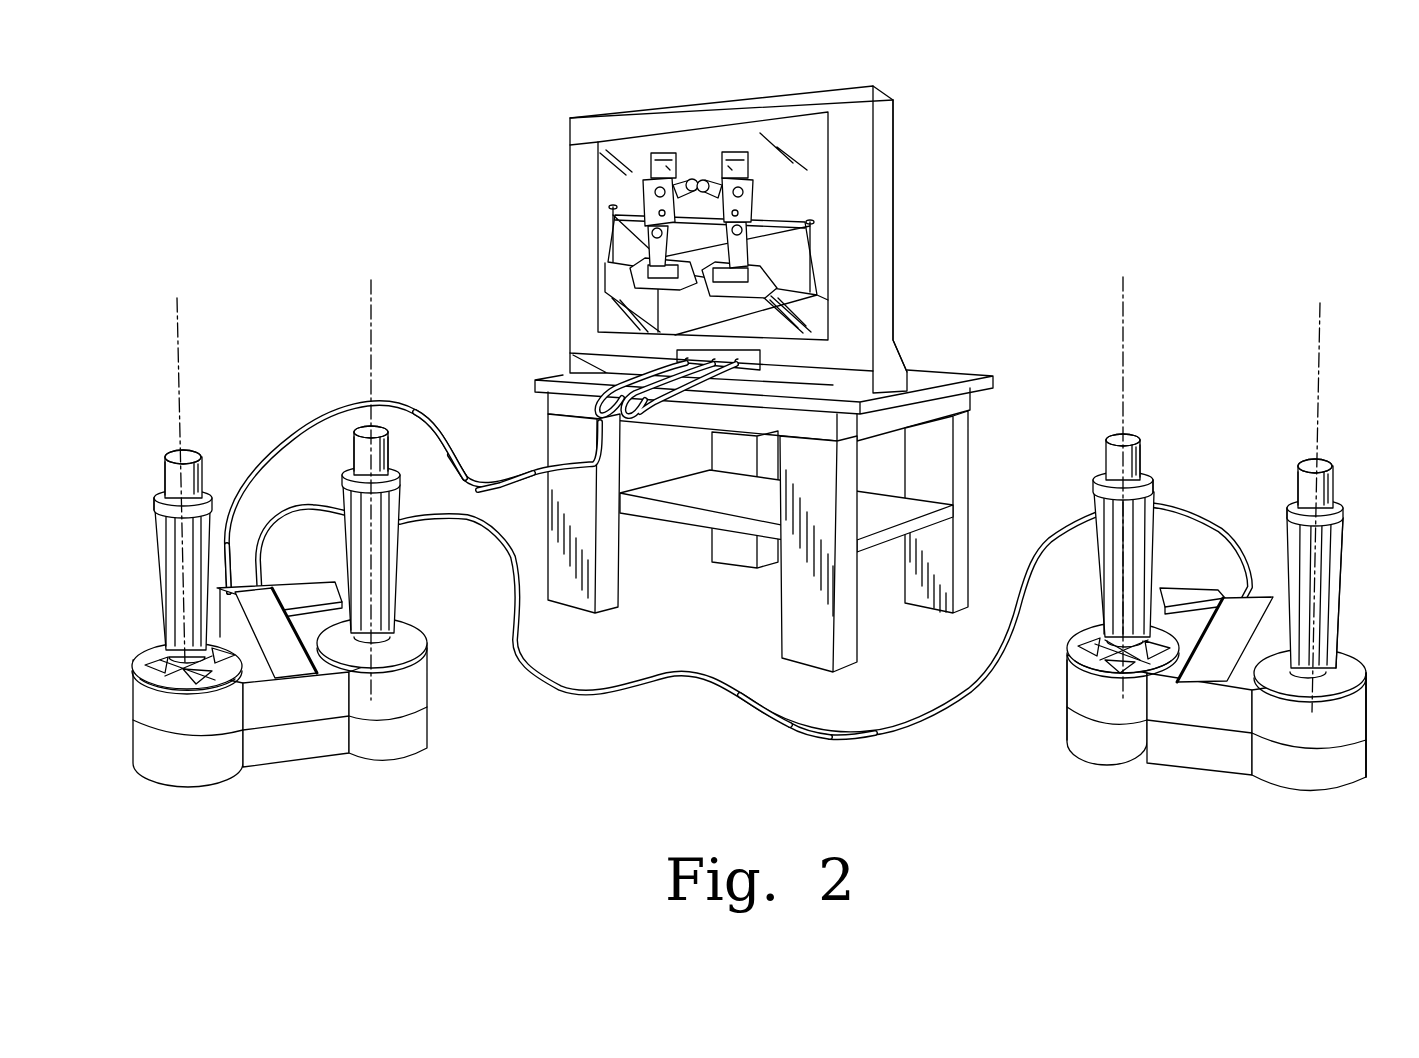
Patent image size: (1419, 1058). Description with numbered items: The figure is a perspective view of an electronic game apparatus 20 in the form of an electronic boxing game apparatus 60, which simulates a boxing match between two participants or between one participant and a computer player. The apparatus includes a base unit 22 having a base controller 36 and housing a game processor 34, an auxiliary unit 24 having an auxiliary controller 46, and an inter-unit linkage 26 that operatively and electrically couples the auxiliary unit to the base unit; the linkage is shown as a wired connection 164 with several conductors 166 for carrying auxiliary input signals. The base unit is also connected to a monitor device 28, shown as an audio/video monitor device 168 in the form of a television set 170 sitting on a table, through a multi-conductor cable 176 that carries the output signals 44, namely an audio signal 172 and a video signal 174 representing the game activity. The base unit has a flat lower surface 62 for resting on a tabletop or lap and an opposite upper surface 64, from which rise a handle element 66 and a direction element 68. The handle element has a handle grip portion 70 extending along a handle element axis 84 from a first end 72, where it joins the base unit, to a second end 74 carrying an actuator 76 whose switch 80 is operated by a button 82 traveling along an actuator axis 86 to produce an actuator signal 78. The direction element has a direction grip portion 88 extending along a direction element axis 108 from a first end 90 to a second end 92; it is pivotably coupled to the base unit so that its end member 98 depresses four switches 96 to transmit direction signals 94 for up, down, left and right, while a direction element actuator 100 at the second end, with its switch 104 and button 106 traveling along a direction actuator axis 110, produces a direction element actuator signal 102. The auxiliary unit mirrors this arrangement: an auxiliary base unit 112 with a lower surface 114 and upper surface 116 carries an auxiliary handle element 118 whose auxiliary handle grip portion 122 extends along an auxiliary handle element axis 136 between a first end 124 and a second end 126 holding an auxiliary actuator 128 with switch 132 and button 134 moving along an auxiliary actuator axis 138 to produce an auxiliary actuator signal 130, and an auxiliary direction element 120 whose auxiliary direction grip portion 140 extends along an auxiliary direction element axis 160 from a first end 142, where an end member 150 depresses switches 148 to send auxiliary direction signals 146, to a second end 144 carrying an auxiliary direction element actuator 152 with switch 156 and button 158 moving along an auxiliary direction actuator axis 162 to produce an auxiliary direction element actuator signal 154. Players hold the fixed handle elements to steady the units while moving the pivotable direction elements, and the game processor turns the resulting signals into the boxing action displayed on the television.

The electronic game apparatus 20 is at (1042, 201).
The base unit 22 is at (312, 681).
The auxiliary unit 24 is at (1303, 785).
The inter-unit linkage 26 is at (887, 737).
The monitor device 28 is at (885, 123).
The game processor 34 is at (393, 676).
The base controller 36 is at (300, 760).
The output signals 44 is at (445, 440).
The auxiliary controller 46 is at (1207, 717).
The electronic boxing game apparatus 60 is at (992, 328).
The lower surface 62 is at (258, 767).
The upper surface 64 is at (267, 597).
The handle element 66 is at (443, 511).
The direction element 68 is at (180, 524).
The handle grip portion 70 is at (378, 589).
The first end 72 is at (408, 636).
The second end 74 is at (408, 458).
The actuator 76 is at (351, 438).
The actuator signal 78 is at (392, 444).
The switch 80 is at (337, 497).
The button 82 is at (375, 426).
The handle element axis 84 is at (378, 548).
The actuator axis 86 is at (377, 298).
The direction grip portion 88 is at (192, 564).
The first end 90 is at (148, 649).
The second end 92 is at (148, 506).
The direction signals 94 is at (177, 690).
The switches 96 is at (235, 693).
The end member 98 is at (276, 633).
The direction element actuator 100 is at (192, 452).
The direction element actuator signal 102 is at (170, 480).
The switch 104 is at (168, 495).
The button 106 is at (175, 453).
The direction element axis 108 is at (221, 543).
The direction actuator axis 110 is at (180, 320).
The auxiliary base unit 112 is at (1067, 731).
The lower surface 114 is at (1235, 757).
The upper surface 116 is at (1230, 677).
The auxiliary handle element 118 is at (1333, 541).
The auxiliary direction element 120 is at (1116, 597).
The auxiliary handle grip portion 122 is at (1328, 586).
The first end 124 is at (1350, 653).
The second end 126 is at (1357, 501).
The auxiliary actuator 128 is at (1293, 456).
The auxiliary actuator signal 130 is at (1287, 523).
The switch 132 is at (1281, 489).
The button 134 is at (1331, 452).
The auxiliary handle element axis 136 is at (1313, 621).
The auxiliary actuator axis 138 is at (1319, 333).
The auxiliary direction grip portion 140 is at (1113, 541).
The first end 142 is at (1073, 640).
The second end 144 is at (1087, 465).
The auxiliary direction signals 146 is at (1093, 654).
The switches 148 is at (1097, 678).
The end member 150 is at (1136, 662).
The auxiliary direction element actuator 152 is at (1156, 428).
The auxiliary direction element actuator signal 154 is at (1142, 500).
The switch 156 is at (1133, 477).
The button 158 is at (1119, 437).
The auxiliary direction element axis 160 is at (1127, 574).
The auxiliary direction actuator axis 162 is at (1122, 303).
The wired connection 164 is at (823, 740).
The conductors 166 is at (767, 730).
The audio/video monitor device 168 is at (885, 172).
The television set 170 is at (885, 273).
The audio signal 172 is at (460, 468).
The video signal 174 is at (503, 483).
The multi-conductor cable 176 is at (438, 396).